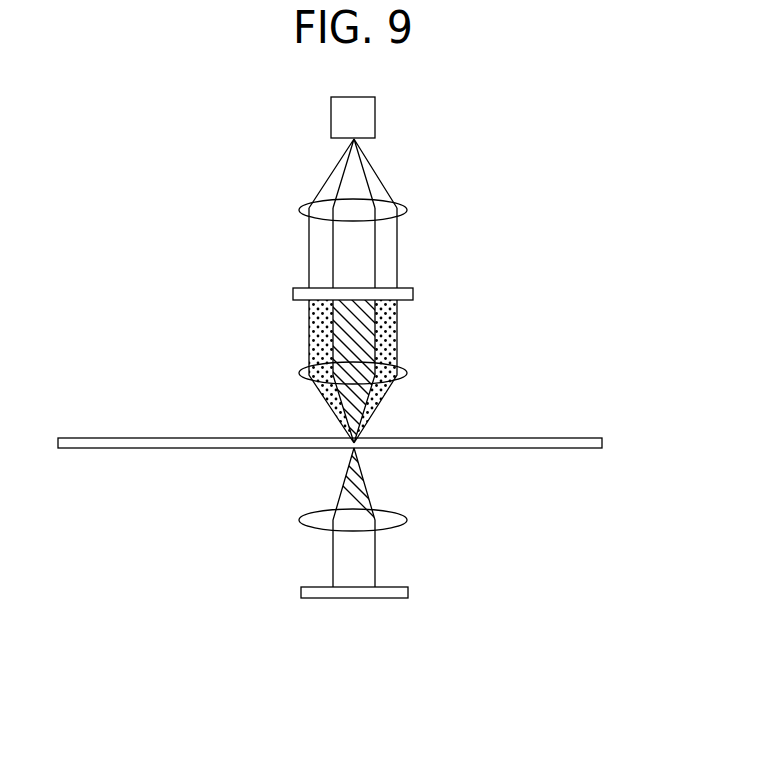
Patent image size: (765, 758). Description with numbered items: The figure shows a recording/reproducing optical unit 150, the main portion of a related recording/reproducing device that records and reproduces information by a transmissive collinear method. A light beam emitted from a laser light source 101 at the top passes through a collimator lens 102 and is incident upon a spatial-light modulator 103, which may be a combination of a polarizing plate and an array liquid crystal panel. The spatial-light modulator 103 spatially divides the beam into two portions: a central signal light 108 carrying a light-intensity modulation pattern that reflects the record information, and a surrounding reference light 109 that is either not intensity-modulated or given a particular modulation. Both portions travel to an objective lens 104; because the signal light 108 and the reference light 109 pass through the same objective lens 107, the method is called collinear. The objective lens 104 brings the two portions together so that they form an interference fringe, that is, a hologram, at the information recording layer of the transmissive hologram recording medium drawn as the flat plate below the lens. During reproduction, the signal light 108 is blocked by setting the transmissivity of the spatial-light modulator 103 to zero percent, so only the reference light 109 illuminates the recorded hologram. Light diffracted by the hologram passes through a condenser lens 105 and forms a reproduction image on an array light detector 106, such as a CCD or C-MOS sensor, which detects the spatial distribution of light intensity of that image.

The laser light source 101 is at (375, 118).
The collimator lens 102 is at (406, 211).
The spatial-light modulator 103 is at (413, 293).
The objective lens 104 is at (405, 379).
The condenser lens 105 is at (408, 514).
The array light detector 106 is at (408, 592).
The objective lens 107 is at (548, 437).
The signal light 108 is at (343, 327).
The reference light 109 is at (327, 351).
The recording/reproducing optical unit 150 is at (535, 220).